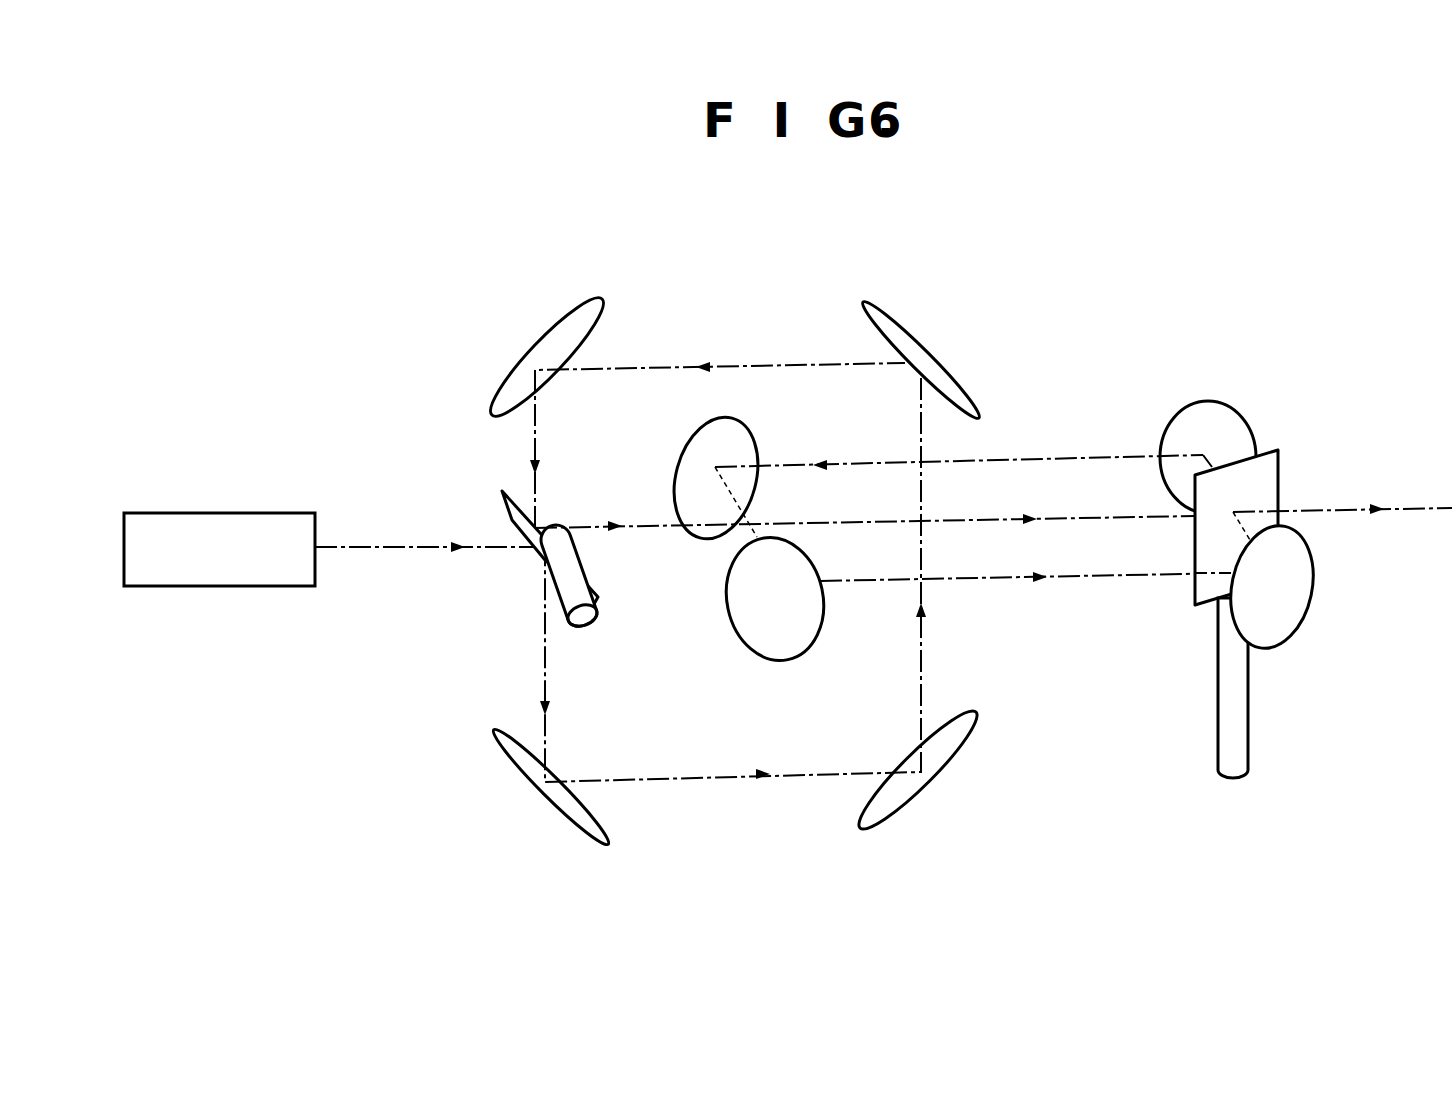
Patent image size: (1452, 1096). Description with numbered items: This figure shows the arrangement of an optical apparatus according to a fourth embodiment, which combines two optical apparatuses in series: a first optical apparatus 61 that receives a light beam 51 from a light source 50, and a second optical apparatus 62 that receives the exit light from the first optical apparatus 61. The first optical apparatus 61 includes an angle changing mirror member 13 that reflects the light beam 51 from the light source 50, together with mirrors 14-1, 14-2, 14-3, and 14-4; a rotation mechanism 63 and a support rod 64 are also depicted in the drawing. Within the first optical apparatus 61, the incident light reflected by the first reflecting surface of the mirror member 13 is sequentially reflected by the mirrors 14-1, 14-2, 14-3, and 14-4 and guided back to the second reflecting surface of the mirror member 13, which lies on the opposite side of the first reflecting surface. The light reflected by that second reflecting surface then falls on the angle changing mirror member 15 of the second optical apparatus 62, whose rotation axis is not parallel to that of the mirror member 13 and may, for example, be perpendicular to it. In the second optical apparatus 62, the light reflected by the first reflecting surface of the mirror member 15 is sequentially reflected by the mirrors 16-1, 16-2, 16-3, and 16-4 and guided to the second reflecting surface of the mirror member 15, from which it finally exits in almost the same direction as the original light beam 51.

The light source 50 is at (243, 513).
The light beam 51 is at (388, 545).
The angle changing mirror member 13 is at (503, 512).
The rotation mechanism 63 is at (598, 613).
The mirror 14-1 is at (512, 758).
The mirror 14-2 is at (945, 772).
The mirror 14-3 is at (902, 325).
The mirror 14-4 is at (560, 318).
The first optical apparatus 61 is at (754, 284).
The second optical apparatus 62 is at (1084, 382).
The mirror 16-1 is at (1200, 403).
The mirror 16-2 is at (753, 428).
The mirror 16-3 is at (740, 637).
The mirror 16-4 is at (1310, 612).
The angle changing mirror member 15 is at (1280, 474).
The support rod 64 is at (1249, 745).